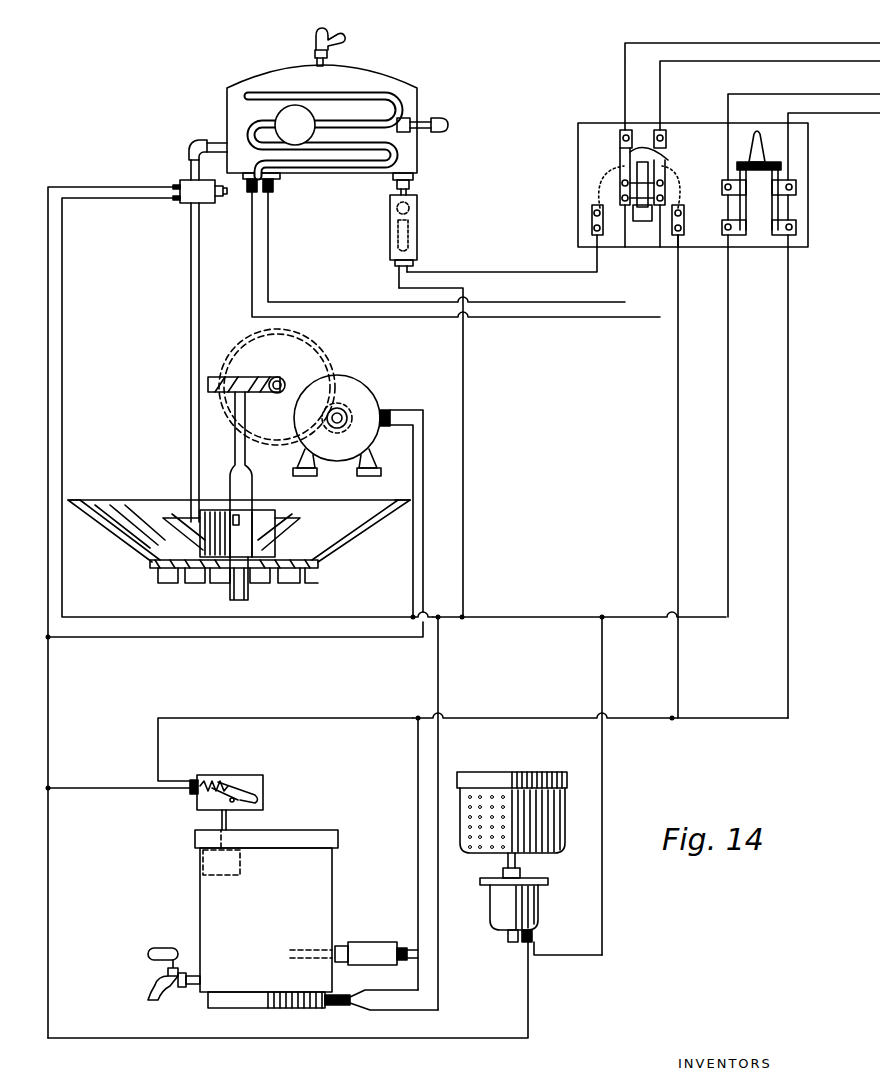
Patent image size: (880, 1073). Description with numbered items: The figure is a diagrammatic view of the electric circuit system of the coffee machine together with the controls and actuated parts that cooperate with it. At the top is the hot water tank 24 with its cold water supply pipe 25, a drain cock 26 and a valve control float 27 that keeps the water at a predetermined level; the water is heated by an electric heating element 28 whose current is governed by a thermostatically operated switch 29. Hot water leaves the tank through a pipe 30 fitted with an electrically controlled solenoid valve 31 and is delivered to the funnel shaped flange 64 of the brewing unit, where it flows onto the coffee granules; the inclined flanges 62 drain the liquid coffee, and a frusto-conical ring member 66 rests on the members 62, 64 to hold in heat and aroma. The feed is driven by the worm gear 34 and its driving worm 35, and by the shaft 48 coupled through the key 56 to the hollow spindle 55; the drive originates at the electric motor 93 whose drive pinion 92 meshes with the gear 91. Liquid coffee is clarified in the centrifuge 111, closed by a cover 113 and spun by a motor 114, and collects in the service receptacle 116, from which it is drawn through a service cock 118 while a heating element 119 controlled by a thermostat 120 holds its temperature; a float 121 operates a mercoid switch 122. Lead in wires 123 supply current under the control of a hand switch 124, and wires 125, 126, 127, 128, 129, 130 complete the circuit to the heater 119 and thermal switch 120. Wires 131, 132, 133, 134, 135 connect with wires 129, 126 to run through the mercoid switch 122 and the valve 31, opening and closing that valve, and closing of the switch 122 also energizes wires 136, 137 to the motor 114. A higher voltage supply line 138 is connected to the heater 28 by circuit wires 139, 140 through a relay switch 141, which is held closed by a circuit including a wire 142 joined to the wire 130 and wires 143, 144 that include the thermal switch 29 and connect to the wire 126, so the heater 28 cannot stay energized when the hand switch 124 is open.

The hot water tank 24 is at (384, 90).
The cold water supply pipe 25 is at (450, 122).
The drain cock 26 is at (335, 30).
The valve control float 27 is at (298, 140).
The electric heating element 28 is at (398, 113).
The thermostatically operated switch 29 is at (420, 222).
The pipe 30 is at (188, 312).
The solenoid valve 31 is at (200, 192).
The worm gear 34 is at (228, 377).
The driving worm 35 is at (282, 378).
The shaft 48 is at (250, 452).
The hollow spindle 55 is at (250, 590).
The key 56 is at (234, 512).
The inclined flanges 62 is at (152, 470).
The funnel shaped flange 64 is at (283, 540).
The frusto-conical sheet metal ring member 66 is at (320, 530).
The gear 91 is at (330, 345).
The drive pinion 92 is at (340, 430).
The electric motor 93 is at (375, 400).
The centrifuge 111 is at (545, 822).
The cover 113 is at (530, 772).
The motor 114 is at (500, 918).
The service receptacle 116 is at (318, 892).
The service cock 118 is at (150, 980).
The heating element 119 is at (255, 1002).
The thermostat 120 is at (365, 942).
The float 121 is at (203, 866).
The mercoid switch 122 is at (258, 790).
The lead in wires 123 is at (808, 108).
The hand switch 124 is at (768, 190).
The wire 125 is at (728, 420).
The wire 126 is at (530, 617).
The wire 127 is at (440, 680).
The wire 128 is at (418, 755).
The wire 129 is at (515, 718).
The wire 130 is at (788, 648).
The wire 131 is at (272, 718).
The wire 132 is at (122, 790).
The wire 133 is at (50, 705).
The wire 134 is at (50, 568).
The wire 135 is at (100, 612).
The wire 136 is at (450, 1040).
The wire 137 is at (602, 955).
The supply line 138 is at (722, 62).
The circuit wire 139 is at (512, 302).
The circuit wire 140 is at (595, 317).
The relay switch 141 is at (668, 160).
The wire 142 is at (678, 482).
The wire 143 is at (485, 272).
The wire 144 is at (465, 545).